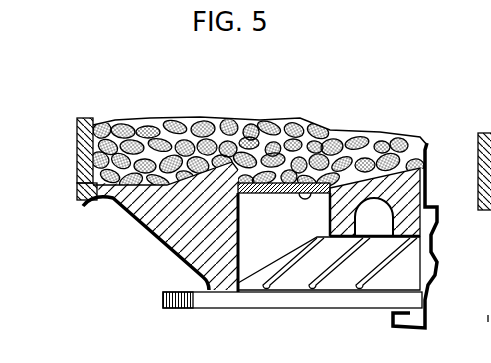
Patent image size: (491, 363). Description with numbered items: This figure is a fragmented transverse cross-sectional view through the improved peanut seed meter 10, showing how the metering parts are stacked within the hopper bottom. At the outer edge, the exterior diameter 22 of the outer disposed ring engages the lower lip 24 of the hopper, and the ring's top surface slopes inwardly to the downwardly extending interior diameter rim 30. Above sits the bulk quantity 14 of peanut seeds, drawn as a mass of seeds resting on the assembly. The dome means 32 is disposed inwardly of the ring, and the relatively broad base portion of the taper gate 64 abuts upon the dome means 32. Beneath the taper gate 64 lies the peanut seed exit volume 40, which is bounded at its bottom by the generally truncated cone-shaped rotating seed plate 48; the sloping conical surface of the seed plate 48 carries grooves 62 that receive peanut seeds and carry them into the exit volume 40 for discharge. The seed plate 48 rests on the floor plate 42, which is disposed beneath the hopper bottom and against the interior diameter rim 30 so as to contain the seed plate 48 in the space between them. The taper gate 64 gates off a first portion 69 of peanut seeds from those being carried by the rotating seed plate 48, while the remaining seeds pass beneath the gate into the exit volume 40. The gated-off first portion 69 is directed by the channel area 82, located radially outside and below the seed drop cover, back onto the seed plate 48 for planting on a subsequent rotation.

The improved peanut seed meter 10 is at (119, 241).
The bulk quantity 14 is at (117, 137).
The exterior diameter 22 is at (88, 205).
The lower lip 24 is at (78, 131).
The interior diameter rim 30 is at (218, 279).
The dome means 32 is at (395, 182).
The peanut seed exit volume 40 is at (270, 234).
The floor plate 42 is at (226, 297).
The rotating seed plate 48 is at (422, 262).
The grooves 62 is at (348, 267).
The taper gate 64 is at (320, 187).
The first portion of peanut seeds 69 is at (281, 183).
The channel area 82 is at (160, 213).